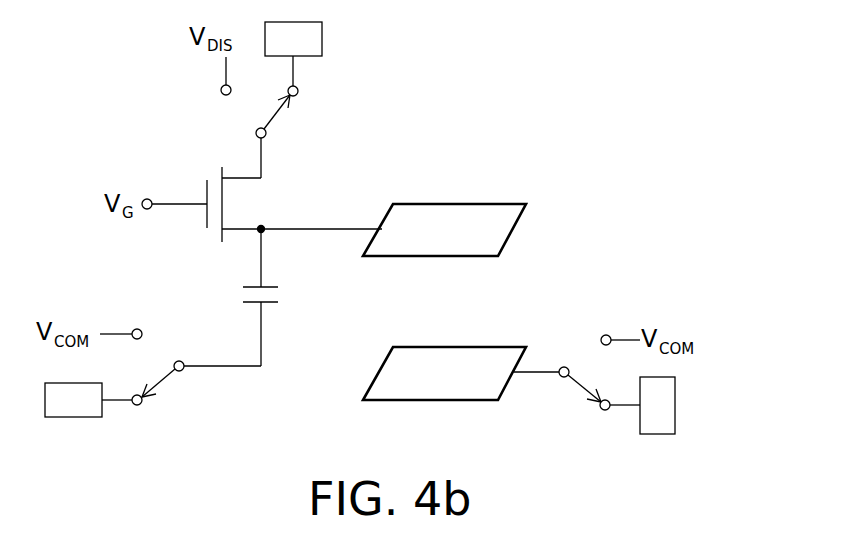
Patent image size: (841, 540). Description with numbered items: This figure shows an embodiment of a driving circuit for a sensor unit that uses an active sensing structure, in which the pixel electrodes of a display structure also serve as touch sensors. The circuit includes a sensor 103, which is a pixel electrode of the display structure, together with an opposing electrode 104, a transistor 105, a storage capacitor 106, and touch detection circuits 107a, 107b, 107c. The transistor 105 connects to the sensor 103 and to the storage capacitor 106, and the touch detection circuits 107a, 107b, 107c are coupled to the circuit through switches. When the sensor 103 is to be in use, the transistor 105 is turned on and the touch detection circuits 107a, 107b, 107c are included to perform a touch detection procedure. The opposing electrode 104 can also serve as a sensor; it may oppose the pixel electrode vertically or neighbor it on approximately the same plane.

The sensor 103 is at (482, 204).
The opposing electrode 104 is at (468, 400).
The transistor 105 is at (250, 202).
The storage capacitor 106 is at (280, 293).
The touch detection circuit 107a is at (322, 37).
The touch detection circuit 107b is at (70, 417).
The touch detection circuit 107c is at (675, 405).